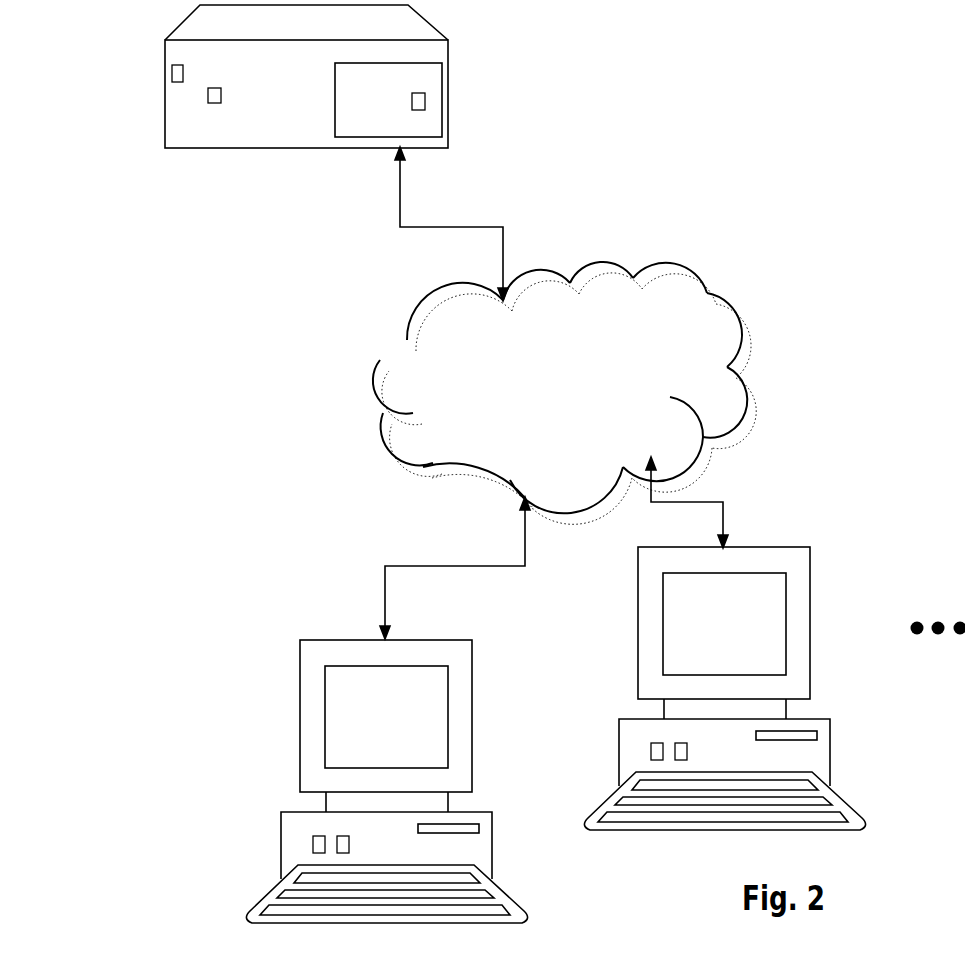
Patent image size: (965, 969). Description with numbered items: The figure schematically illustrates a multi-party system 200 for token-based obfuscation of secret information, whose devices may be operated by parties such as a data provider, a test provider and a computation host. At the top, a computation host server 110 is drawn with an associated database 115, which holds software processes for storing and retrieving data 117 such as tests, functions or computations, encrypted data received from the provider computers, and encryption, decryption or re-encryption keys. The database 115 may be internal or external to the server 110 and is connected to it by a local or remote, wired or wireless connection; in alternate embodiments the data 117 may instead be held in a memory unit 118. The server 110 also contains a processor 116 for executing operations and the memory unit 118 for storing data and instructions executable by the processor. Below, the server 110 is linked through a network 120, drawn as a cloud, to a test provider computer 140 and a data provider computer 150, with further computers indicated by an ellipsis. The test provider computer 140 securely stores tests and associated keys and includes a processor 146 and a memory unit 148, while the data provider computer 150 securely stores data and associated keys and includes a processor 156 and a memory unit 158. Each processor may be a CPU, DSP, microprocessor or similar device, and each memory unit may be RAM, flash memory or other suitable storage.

The computation host server 110 is at (165, 103).
The database 115 is at (392, 102).
The processor 116 is at (177, 82).
The data 117 is at (417, 110).
The memory unit 118 is at (215, 88).
The network 120 is at (588, 402).
The test provider computer 140 is at (426, 711).
The processor 146 is at (313, 843).
The memory unit 148 is at (339, 837).
The data provider computer 150 is at (764, 621).
The processor 156 is at (651, 750).
The memory unit 158 is at (677, 744).
The multi-party system 200 is at (866, 112).